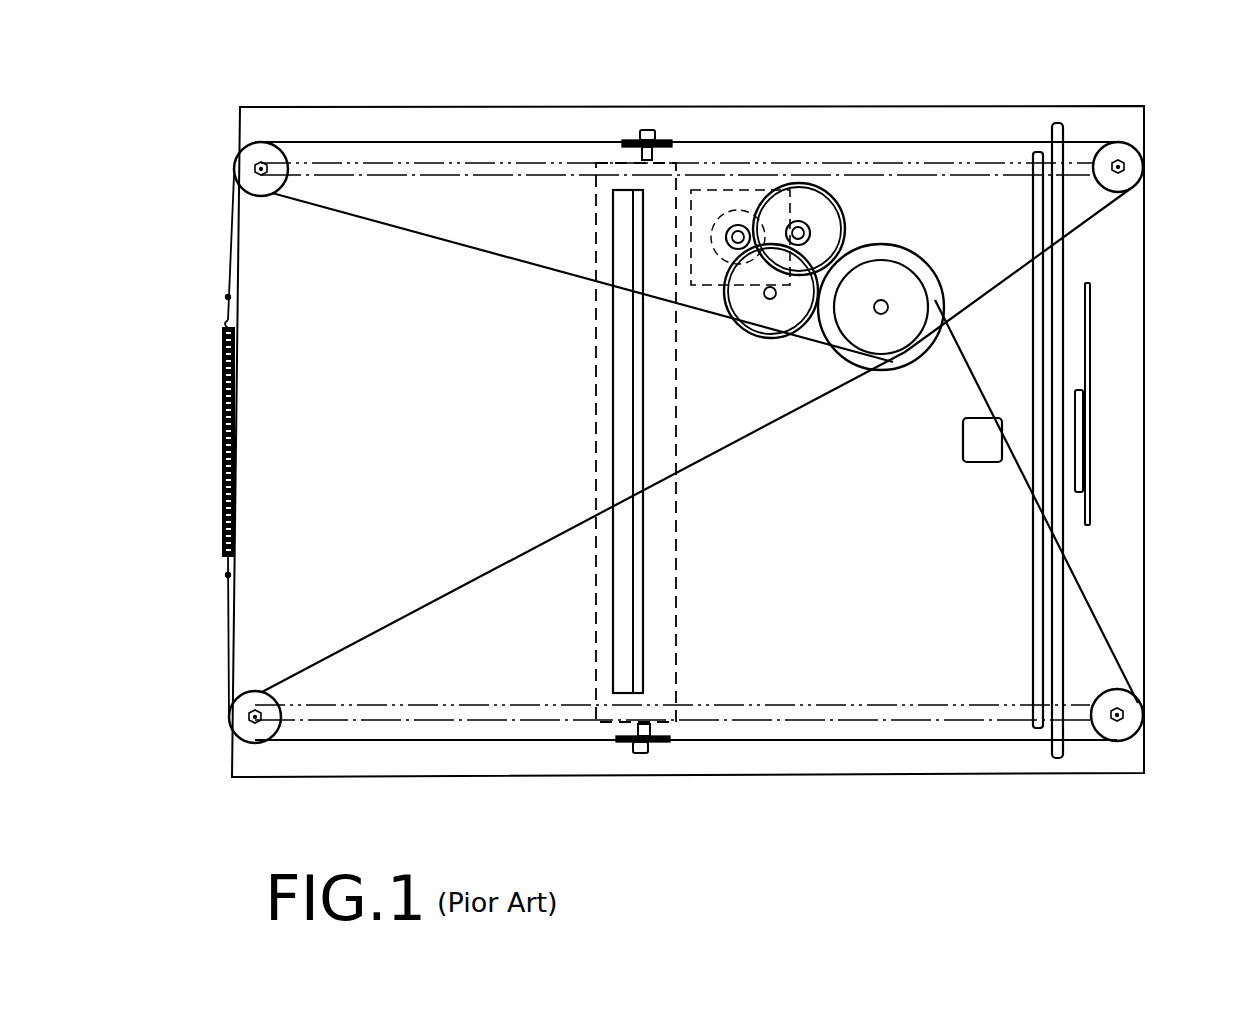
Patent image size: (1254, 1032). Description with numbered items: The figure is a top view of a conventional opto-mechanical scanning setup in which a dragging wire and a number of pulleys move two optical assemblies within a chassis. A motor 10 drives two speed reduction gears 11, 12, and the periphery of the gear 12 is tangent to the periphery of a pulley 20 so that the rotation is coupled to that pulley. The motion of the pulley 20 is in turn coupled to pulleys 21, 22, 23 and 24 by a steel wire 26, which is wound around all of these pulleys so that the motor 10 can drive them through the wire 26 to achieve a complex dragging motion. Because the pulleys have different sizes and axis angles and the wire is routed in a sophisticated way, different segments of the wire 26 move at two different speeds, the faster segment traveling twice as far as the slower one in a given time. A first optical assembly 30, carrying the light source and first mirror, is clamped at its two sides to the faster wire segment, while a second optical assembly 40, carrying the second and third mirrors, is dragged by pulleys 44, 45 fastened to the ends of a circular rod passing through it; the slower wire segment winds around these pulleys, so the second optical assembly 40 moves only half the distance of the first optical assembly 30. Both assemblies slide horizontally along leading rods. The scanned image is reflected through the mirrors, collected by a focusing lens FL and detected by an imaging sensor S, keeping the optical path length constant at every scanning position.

The motor 10 is at (733, 192).
The speed reduction gear 11 is at (836, 205).
The speed reduction gear 12 is at (770, 340).
The pulley 20 is at (903, 275).
The pulley 21 is at (1133, 160).
The pulley 22 is at (1133, 715).
The pulley 23 is at (262, 153).
The pulley 24 is at (232, 732).
The steel wire 26 is at (1085, 600).
The first optical assembly 30 is at (1063, 272).
The second optical assembly 40 is at (663, 585).
The pulley 44 is at (646, 128).
The pulley 45 is at (662, 743).
The focusing lens FL is at (981, 455).
The imaging sensor S is at (1082, 422).